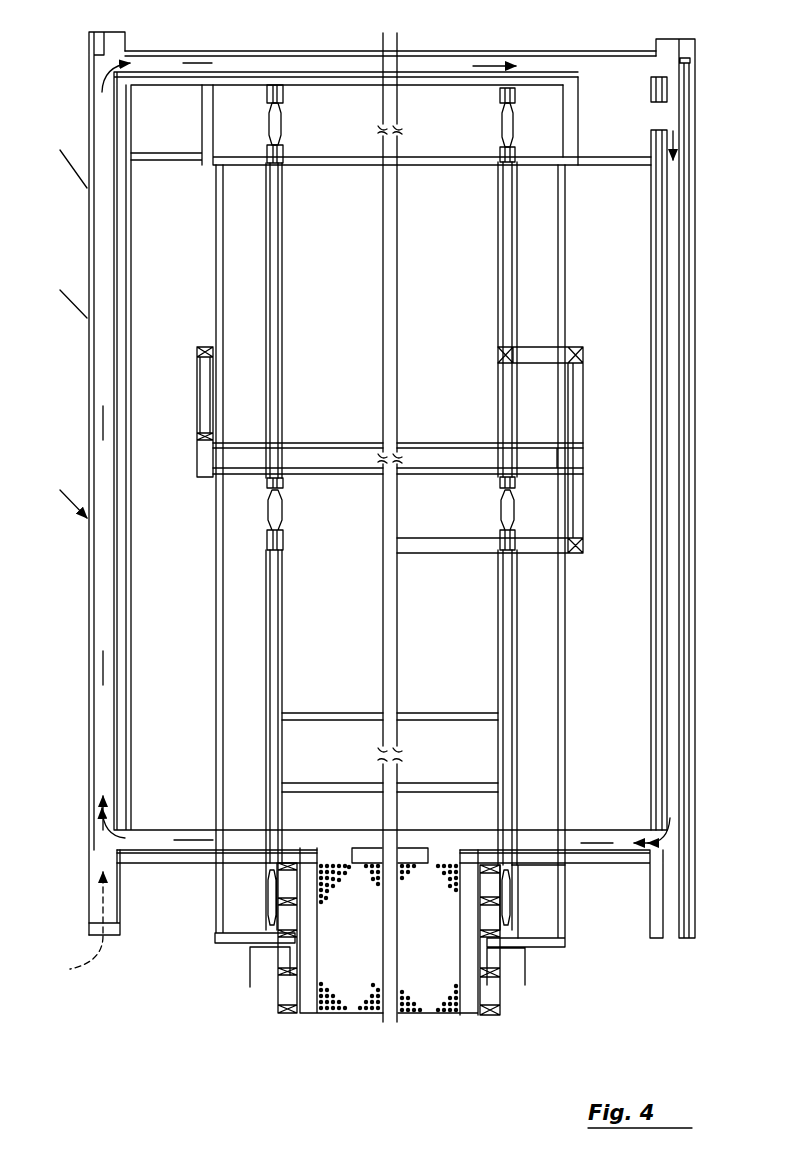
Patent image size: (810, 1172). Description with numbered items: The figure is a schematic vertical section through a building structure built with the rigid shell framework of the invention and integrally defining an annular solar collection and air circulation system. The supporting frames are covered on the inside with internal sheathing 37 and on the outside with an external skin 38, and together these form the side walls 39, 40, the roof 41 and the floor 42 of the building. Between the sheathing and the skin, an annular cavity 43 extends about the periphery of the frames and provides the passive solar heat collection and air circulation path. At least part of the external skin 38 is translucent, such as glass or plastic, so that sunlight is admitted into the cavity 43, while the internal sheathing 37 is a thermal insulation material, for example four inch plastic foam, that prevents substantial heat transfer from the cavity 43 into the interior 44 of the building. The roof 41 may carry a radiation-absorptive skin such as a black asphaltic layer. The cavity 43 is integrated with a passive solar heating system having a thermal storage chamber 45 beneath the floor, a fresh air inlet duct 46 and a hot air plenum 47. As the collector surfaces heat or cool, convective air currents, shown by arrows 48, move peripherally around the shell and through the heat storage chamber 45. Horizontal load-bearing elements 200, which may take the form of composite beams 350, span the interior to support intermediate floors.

The internal sheathing 37 is at (133, 294).
The external skin 38 is at (87, 262).
The side wall 39 is at (86, 385).
The side wall 40 is at (697, 513).
The roof 41 is at (221, 51).
The floor 42 is at (168, 864).
The annular cavity 43 is at (114, 590).
The interior of the building 44 is at (390, 576).
The thermal storage chamber 45 is at (345, 986).
The fresh air inlet duct 46 is at (93, 893).
The hot air plenum 47 is at (606, 121).
The arrows 48 is at (617, 103).
The further horizontal load-bearing element 200 is at (497, 128).
The composite beam 350 is at (501, 492).